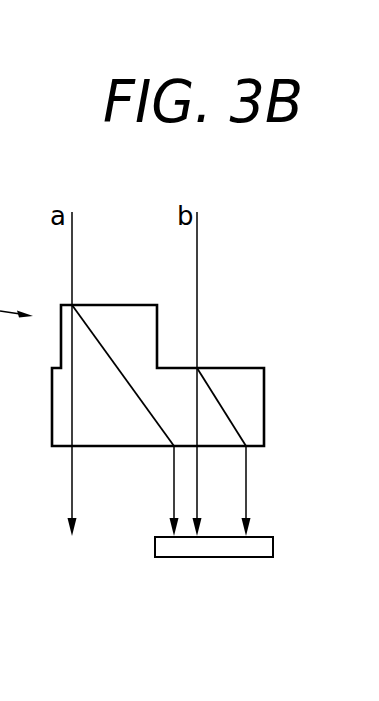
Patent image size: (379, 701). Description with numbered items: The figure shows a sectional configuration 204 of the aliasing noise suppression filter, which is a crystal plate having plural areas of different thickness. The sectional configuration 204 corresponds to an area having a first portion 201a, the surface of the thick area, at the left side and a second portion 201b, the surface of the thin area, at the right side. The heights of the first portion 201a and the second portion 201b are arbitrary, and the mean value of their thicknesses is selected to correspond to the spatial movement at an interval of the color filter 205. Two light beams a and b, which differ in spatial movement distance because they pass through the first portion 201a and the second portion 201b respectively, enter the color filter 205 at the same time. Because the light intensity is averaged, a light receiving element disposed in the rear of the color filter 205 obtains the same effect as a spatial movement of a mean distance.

The sectional configuration 204 is at (308, 283).
The first portion 201a is at (117, 305).
The second portion 201b is at (245, 368).
The color filter 205 is at (274, 543).